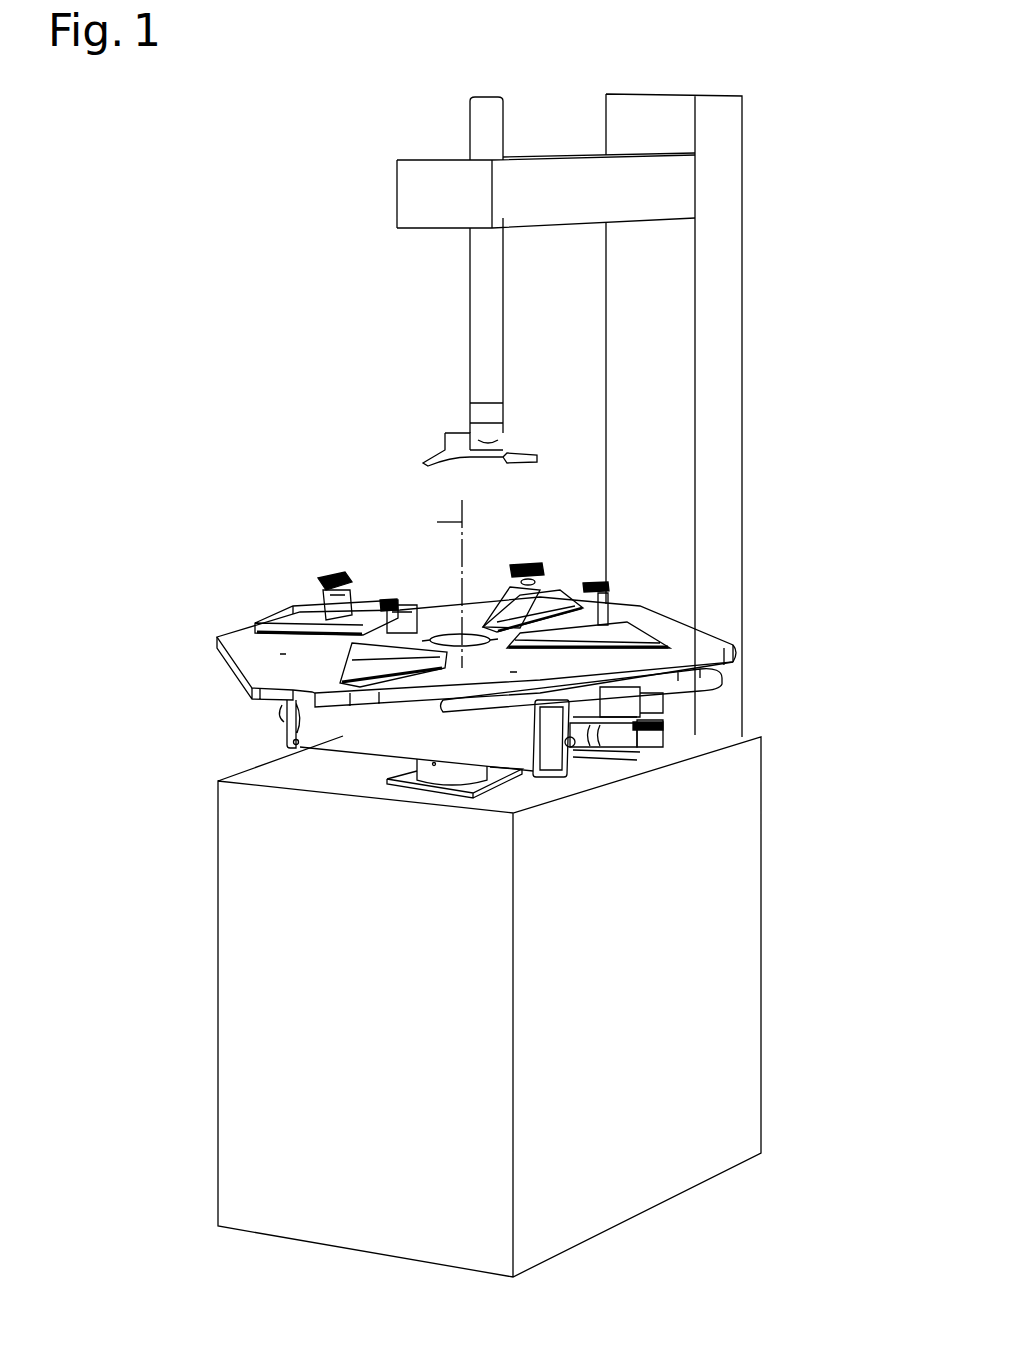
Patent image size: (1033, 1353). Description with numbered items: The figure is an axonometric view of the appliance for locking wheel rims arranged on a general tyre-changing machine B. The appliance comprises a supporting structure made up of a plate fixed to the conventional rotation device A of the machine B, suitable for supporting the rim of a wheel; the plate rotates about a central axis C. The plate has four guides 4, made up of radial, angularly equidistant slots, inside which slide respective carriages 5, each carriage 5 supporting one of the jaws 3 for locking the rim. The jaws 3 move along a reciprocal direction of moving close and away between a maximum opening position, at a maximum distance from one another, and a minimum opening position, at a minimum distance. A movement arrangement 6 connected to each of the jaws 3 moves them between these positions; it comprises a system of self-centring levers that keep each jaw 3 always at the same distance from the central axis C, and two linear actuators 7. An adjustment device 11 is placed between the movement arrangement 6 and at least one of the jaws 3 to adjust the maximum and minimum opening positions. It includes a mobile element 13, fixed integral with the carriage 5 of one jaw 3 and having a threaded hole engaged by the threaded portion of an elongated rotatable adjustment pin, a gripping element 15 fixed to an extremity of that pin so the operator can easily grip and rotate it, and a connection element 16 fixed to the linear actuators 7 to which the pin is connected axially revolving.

The jaws 3 is at (380, 600).
The guides 4 is at (725, 652).
The carriages 5 is at (290, 615).
The movement arrangement 6 is at (342, 737).
The linear actuators 7 is at (410, 731).
The adjustment device 11 is at (667, 727).
The mobile element 13 is at (628, 712).
The gripping element 15 is at (622, 758).
The connection element 16 is at (607, 747).
The rotation device A is at (449, 768).
The machine B is at (747, 985).
The central axis C is at (462, 522).